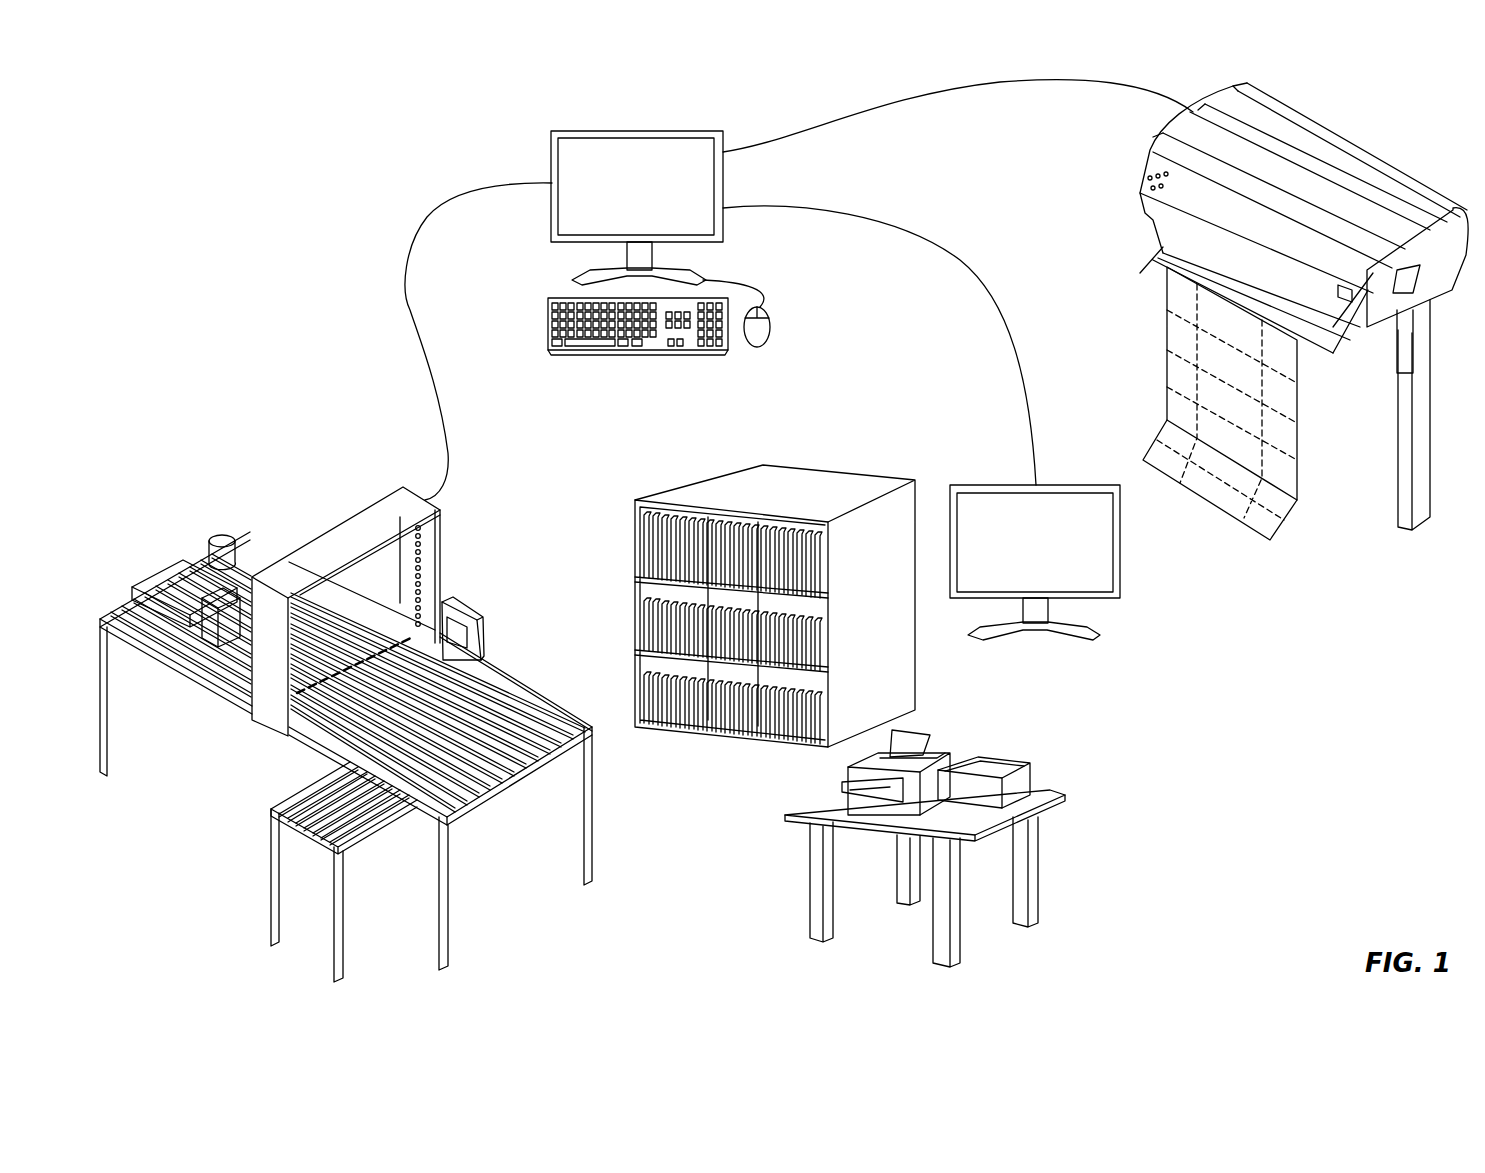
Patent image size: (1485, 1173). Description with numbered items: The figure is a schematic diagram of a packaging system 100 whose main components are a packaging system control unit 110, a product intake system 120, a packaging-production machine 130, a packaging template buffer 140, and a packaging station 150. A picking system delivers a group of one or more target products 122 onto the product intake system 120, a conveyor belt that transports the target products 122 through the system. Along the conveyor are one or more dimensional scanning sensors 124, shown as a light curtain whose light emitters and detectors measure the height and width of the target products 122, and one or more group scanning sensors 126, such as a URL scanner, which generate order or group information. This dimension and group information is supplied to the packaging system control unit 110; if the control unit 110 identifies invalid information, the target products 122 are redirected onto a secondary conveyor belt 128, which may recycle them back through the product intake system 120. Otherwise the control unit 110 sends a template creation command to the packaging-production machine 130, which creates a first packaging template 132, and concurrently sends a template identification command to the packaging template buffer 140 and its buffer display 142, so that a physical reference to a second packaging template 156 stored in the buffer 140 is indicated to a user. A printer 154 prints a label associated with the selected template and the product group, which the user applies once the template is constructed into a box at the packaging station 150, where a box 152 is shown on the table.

The packaging system 100 is at (258, 212).
The packaging system control unit 110 is at (613, 128).
The product intake system 120 is at (252, 467).
The target products 122 is at (160, 558).
The dimensional scanning sensors 124 is at (372, 517).
The group scanning sensors 126 is at (468, 605).
The secondary conveyor belt 128 is at (365, 855).
The packaging-production machine 130 is at (1380, 125).
The first packaging template 132 is at (1272, 512).
The packaging template buffer 140 is at (834, 452).
The buffer display 142 is at (1120, 573).
The packaging station 150 is at (1088, 845).
The box 152 is at (1022, 785).
The printer 154 is at (848, 785).
The second packaging template 156 is at (655, 620).